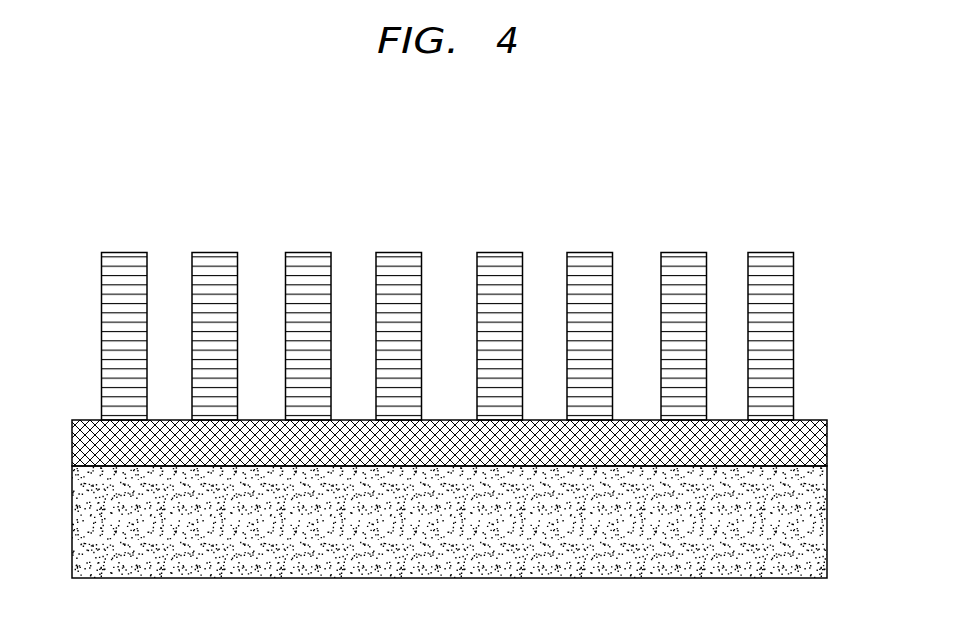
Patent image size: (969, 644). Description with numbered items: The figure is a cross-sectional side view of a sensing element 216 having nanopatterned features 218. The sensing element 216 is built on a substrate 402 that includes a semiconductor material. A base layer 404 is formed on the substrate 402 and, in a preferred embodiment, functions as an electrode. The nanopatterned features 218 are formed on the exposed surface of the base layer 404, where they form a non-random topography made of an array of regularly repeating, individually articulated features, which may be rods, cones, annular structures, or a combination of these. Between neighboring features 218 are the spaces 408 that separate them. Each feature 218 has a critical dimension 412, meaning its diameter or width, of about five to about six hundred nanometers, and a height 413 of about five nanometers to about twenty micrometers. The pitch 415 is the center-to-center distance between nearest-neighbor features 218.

The sensing element 216 is at (447, 158).
The nanopatterned features 218 is at (393, 252).
The substrate 402 is at (466, 534).
The base layer 404 is at (466, 456).
The spaces between pillars 408 is at (173, 267).
The critical dimension 412 is at (147, 250).
The height 413 is at (100, 252).
The pitch 415 is at (127, 429).